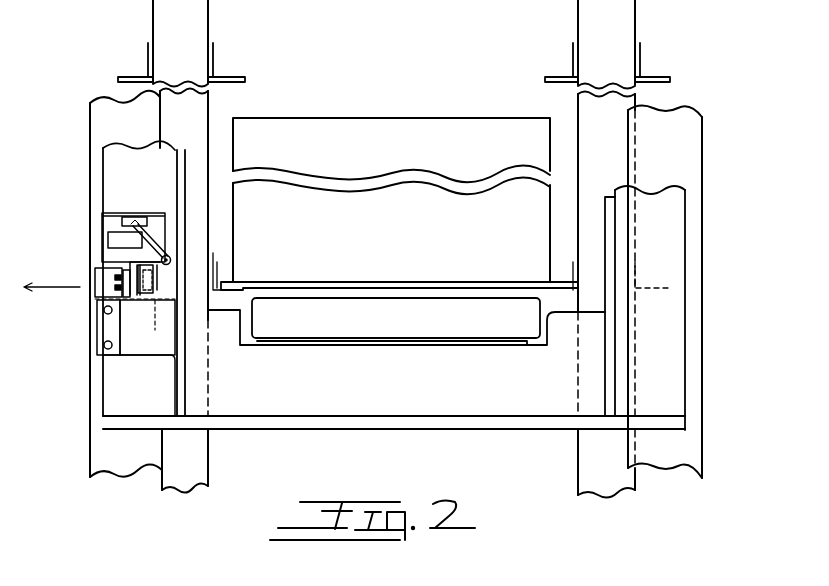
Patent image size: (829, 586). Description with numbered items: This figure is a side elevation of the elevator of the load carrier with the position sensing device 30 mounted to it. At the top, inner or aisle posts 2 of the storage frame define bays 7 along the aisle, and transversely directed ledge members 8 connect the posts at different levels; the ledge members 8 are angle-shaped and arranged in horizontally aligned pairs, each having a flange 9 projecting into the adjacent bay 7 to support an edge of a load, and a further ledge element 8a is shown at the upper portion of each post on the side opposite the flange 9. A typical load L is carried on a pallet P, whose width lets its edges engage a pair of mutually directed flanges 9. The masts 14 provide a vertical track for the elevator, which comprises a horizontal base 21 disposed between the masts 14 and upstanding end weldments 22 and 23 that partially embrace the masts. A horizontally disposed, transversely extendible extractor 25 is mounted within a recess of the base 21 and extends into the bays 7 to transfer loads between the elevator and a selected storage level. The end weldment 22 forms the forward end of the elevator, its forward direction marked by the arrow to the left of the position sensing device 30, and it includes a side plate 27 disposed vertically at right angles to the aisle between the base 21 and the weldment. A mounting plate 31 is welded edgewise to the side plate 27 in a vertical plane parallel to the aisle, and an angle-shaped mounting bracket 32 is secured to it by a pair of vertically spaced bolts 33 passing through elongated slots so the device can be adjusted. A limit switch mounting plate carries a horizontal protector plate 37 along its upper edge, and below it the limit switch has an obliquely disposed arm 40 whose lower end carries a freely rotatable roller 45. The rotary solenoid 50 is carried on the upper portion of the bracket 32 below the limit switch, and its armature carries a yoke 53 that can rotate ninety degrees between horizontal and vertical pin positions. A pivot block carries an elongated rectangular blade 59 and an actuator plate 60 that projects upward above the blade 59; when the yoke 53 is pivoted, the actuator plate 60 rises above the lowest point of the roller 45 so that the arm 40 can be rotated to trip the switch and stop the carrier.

The inner post 2 is at (195, 461).
The bay 7 is at (413, 43).
The ledge member 8 is at (215, 46).
The bracket 8a is at (213, 53).
The flange 9 is at (245, 73).
The mast 14 is at (100, 444).
The horizontal base 21 is at (376, 398).
The end weldment 22 is at (103, 191).
The end weldment 23 is at (670, 192).
The extractor 25 is at (473, 298).
The side plate 27 is at (186, 162).
The position sensing device 30 is at (149, 297).
The mounting plate 31 is at (142, 358).
The mounting bracket 32 is at (97, 331).
The bolt 33 is at (104, 347).
The protector plate 37 is at (135, 212).
The arm 40 is at (152, 238).
The roller 45 is at (168, 259).
The rotary solenoid 50 is at (120, 283).
The yoke 53 is at (142, 300).
The blade 59 is at (163, 312).
The actuator plate 60 is at (157, 280).
The load L is at (405, 116).
The pallet P is at (408, 282).